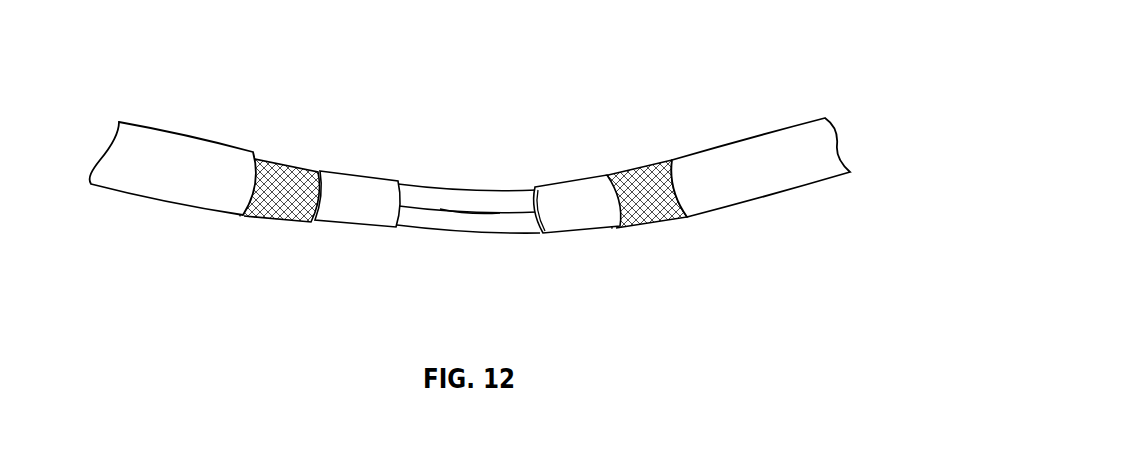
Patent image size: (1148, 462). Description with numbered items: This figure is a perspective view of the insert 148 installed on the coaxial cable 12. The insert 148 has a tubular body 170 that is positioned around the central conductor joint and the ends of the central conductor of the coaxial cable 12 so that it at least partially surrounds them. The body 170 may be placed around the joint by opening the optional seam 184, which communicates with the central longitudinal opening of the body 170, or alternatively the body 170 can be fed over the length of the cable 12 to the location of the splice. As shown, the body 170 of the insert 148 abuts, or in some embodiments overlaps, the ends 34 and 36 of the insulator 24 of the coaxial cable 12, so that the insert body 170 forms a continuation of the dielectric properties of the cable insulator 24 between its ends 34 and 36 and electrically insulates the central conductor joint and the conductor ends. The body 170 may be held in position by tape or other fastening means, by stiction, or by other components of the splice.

The coaxial cable 12 is at (188, 134).
The insulator 24 is at (345, 183).
The end of the insulator 34 is at (358, 232).
The end of the insulator 36 is at (577, 175).
The insert 148 is at (517, 232).
The body 170 is at (421, 190).
The seam 184 is at (482, 208).